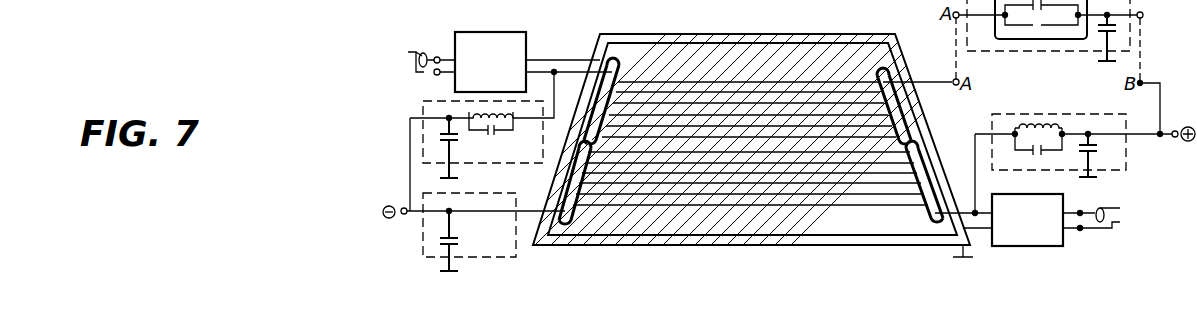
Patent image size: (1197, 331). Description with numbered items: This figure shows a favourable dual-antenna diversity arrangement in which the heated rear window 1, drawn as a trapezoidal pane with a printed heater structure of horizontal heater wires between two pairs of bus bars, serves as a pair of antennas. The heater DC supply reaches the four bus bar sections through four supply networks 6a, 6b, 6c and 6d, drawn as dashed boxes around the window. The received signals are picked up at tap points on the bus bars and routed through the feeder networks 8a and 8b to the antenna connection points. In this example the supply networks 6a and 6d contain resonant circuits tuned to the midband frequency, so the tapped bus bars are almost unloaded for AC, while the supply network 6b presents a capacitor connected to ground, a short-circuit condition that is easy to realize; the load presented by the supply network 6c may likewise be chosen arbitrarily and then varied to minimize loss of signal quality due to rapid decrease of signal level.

The rear window 1 is at (896, 236).
The feeder network 8a is at (498, 78).
The feeder network 8b is at (1036, 234).
The supply network 6a is at (522, 157).
The supply network 6b is at (492, 253).
The supply network 6c is at (990, 41).
The supply network 6d is at (1116, 167).